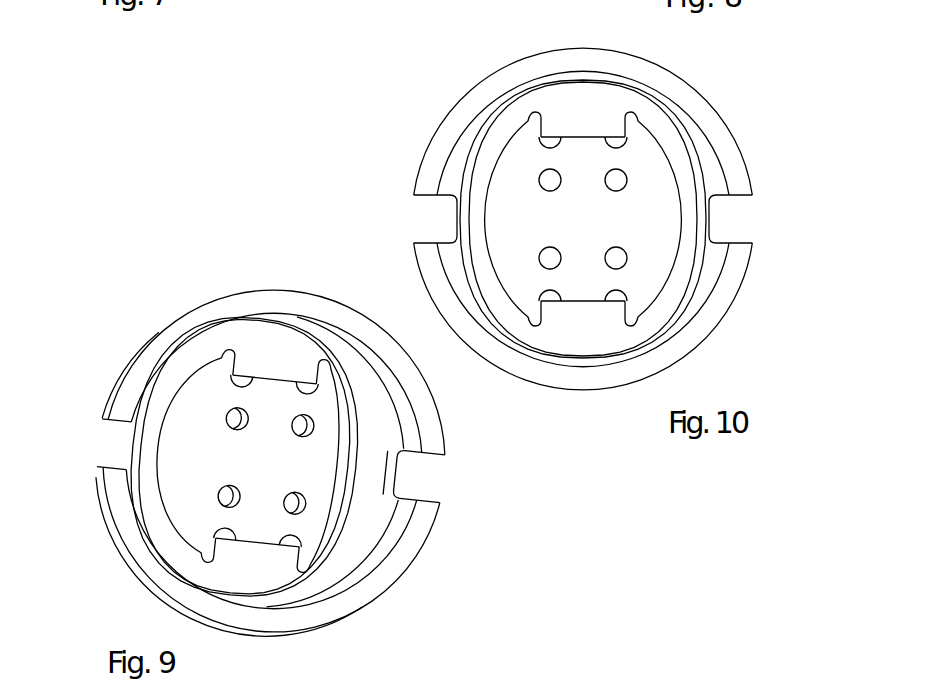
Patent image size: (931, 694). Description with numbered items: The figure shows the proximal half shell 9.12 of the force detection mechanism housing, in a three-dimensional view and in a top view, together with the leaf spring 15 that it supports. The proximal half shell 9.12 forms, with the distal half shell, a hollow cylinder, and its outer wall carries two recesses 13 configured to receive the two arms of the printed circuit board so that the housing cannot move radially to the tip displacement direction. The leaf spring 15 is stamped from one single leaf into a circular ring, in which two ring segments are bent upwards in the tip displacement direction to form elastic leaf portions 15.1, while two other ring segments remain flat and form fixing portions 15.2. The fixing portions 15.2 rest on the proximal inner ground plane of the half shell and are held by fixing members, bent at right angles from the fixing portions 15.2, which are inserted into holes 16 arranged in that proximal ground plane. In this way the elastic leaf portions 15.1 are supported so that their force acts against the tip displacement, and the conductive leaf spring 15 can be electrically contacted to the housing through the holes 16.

In FIG. 10, the proximal half shell 9.12 is at (557, 62).
In FIG. 9, the proximal half shell 9.12 is at (255, 302).
In FIG. 10, the recesses 13 is at (551, 219).
In FIG. 9, the recesses 13 is at (306, 461).
In FIG. 10, the leaf spring 15 is at (530, 107).
In FIG. 9, the leaf spring 15 is at (210, 350).
In FIG. 10, the elastic leaf portions 15.1 is at (477, 192).
In FIG. 10, the fixing portions 15.2 is at (590, 130).
In FIG. 9, the holes 16 is at (266, 461).